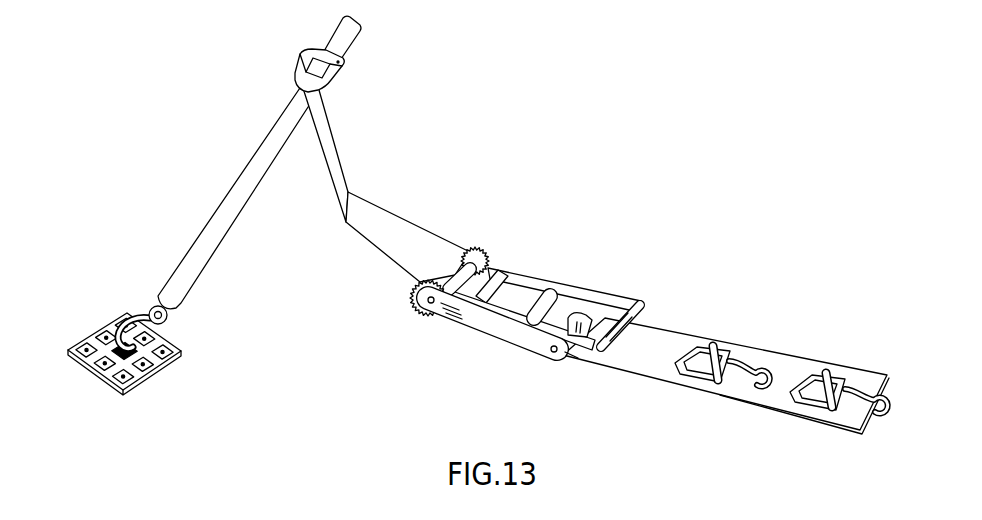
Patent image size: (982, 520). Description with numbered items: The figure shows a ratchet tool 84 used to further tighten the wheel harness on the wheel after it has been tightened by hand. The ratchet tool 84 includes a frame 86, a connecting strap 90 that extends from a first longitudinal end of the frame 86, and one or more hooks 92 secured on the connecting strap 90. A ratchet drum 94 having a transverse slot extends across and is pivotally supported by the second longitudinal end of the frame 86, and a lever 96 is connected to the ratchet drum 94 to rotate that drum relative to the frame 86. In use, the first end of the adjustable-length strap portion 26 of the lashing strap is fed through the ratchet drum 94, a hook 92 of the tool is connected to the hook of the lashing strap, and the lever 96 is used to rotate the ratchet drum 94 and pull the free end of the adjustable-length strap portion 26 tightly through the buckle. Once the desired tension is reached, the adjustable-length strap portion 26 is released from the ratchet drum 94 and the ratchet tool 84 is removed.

The adjustable-length strap portion 26 is at (388, 245).
The ratchet tool 84 is at (560, 285).
The frame 86 is at (527, 348).
The connecting strap 90 is at (645, 362).
The hooks 92 is at (765, 365).
The ratchet drum 94 is at (468, 252).
The lever 96 is at (640, 305).